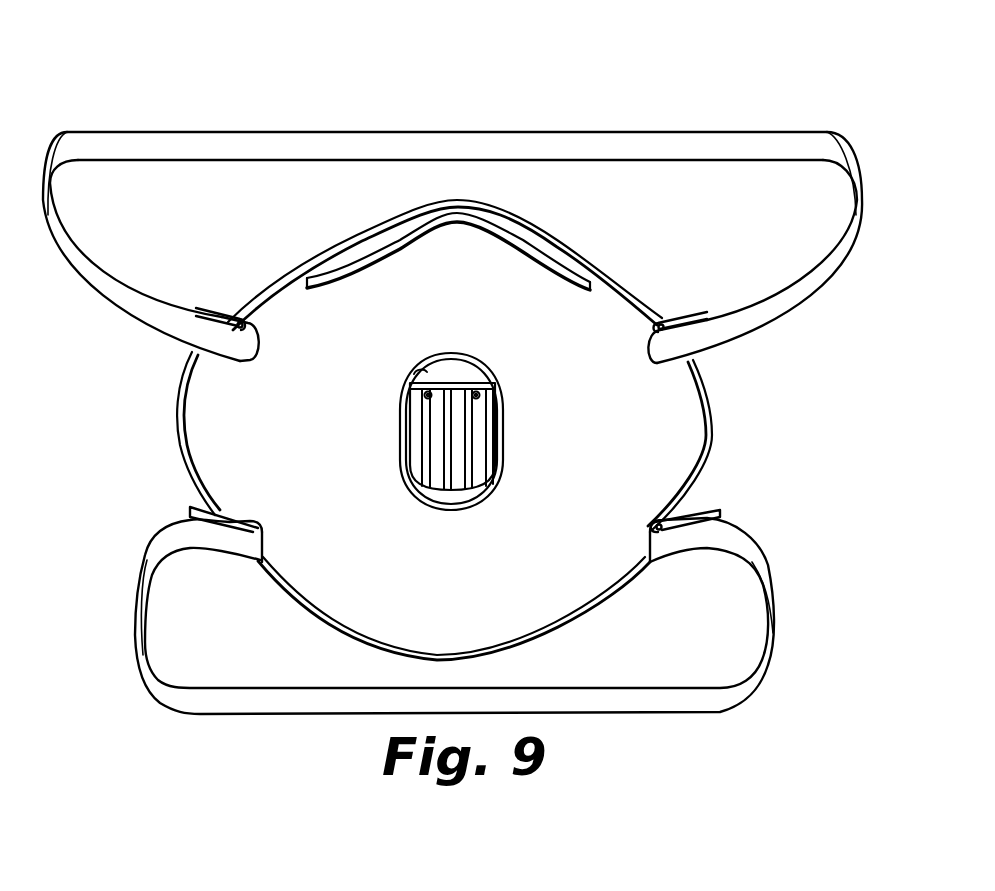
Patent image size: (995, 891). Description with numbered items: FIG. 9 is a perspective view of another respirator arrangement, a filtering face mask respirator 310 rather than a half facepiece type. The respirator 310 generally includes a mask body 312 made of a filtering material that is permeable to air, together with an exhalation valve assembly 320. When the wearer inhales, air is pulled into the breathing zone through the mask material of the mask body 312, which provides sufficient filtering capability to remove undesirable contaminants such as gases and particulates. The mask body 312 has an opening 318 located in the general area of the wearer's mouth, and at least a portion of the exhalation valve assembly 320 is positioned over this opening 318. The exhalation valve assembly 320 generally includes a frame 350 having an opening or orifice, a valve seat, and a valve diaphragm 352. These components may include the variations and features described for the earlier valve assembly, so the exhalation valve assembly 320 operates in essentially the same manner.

The filtering face mask respirator 310 is at (452, 372).
The mask body 312 is at (692, 430).
The opening 318 is at (417, 377).
The exhalation valve assembly 320 is at (461, 432).
The frame 350 is at (457, 370).
The valve diaphragm 352 is at (442, 482).